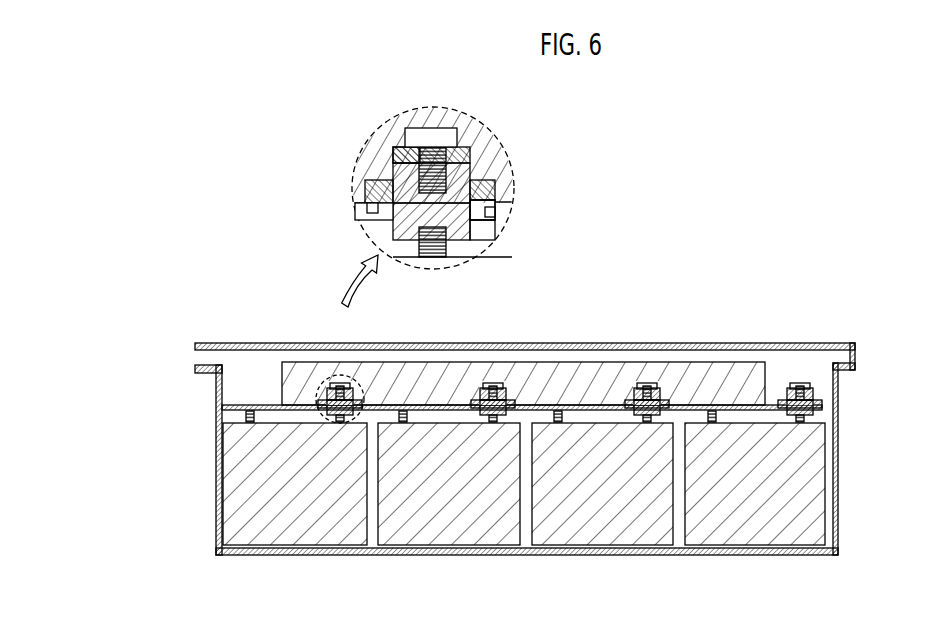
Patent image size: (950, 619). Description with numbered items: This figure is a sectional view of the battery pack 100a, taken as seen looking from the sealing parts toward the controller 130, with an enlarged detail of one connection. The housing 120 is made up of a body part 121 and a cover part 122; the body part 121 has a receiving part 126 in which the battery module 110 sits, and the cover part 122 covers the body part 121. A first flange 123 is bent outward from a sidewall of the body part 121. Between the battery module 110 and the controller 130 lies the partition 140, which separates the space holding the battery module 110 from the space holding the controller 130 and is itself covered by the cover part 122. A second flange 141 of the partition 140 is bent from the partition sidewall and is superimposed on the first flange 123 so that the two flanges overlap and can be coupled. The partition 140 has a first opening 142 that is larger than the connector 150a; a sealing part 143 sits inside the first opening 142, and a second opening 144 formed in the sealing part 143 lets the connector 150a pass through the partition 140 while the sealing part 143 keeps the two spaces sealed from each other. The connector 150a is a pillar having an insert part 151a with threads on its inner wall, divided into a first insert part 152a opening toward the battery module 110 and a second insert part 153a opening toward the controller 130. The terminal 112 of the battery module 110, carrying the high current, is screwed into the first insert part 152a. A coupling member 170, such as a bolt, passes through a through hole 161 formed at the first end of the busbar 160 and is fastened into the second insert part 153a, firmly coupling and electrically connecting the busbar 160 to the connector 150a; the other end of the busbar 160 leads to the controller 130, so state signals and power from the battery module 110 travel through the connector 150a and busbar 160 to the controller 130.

The battery pack 100a is at (188, 124).
The battery module 110 is at (839, 496).
The terminal 112 is at (246, 418).
The housing 120 is at (112, 400).
The body part 121 is at (212, 460).
The cover part 122 is at (193, 340).
The first flange 123 is at (848, 371).
The receiving part 126 is at (830, 440).
The controller 130 is at (575, 388).
The partition 140 is at (247, 399).
The second flange 141 is at (834, 362).
The first opening 142 is at (488, 229).
The sealing part 143 is at (493, 178).
The second opening 144 is at (476, 201).
The connector 150a is at (319, 428).
The insert part 151a is at (300, 165).
The first insert part 152a is at (398, 225).
The second insert part 153a is at (400, 166).
The busbar 160 is at (337, 377).
The through hole 161 is at (402, 151).
The coupling member 170 is at (353, 376).